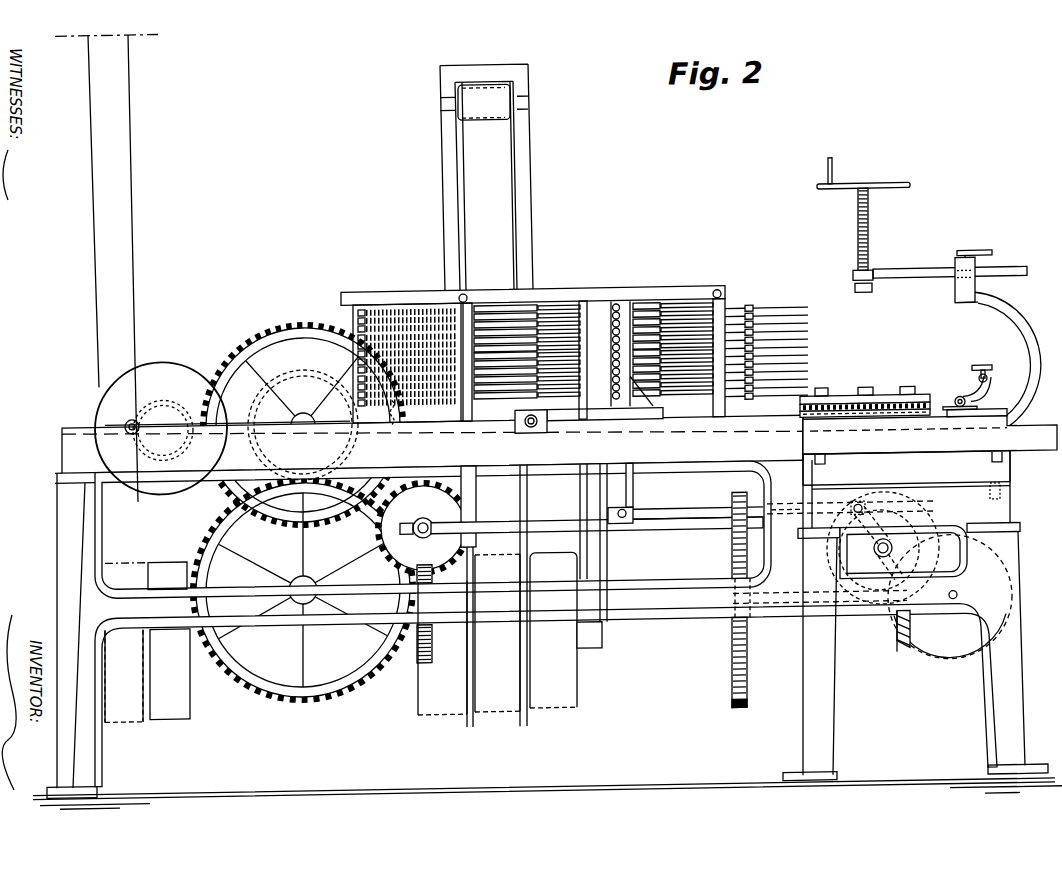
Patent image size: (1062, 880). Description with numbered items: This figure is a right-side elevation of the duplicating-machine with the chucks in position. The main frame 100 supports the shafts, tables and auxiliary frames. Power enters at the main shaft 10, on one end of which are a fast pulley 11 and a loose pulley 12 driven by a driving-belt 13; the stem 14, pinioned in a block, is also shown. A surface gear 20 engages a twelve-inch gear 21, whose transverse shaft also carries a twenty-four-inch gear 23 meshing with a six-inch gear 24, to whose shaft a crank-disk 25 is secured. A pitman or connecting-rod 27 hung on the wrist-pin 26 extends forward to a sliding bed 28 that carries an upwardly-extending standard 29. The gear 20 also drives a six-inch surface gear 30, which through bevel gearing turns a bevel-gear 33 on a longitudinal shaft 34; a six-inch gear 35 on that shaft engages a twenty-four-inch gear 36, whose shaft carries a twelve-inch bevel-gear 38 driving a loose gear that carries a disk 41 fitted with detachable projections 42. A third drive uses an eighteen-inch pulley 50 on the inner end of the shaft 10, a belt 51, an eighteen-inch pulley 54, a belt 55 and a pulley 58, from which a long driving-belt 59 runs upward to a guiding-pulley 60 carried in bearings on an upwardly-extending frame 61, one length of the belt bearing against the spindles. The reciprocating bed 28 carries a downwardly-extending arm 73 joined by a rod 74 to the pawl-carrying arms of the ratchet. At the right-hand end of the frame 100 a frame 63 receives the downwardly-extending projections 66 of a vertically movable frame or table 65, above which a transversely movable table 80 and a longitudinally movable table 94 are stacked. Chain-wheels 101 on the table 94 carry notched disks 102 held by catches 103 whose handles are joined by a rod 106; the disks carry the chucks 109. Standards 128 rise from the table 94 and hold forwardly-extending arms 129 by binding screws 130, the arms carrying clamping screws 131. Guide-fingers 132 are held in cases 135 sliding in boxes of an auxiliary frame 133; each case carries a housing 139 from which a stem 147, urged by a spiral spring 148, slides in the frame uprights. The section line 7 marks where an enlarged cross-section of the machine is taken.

The section line 7 is at (942, 707).
The main shaft 10 is at (265, 628).
The fast pulley 11 is at (148, 715).
The loose pulley 12 is at (167, 576).
The driving-belt 13 is at (106, 269).
The stem 14 is at (432, 659).
The surface gear 20 is at (353, 680).
The twelve-inch gear 21 is at (293, 400).
The twenty-four-inch gear 23 is at (280, 327).
The six-inch gear 24 is at (160, 404).
The crank-disk 25 is at (166, 358).
The wrist-pin 26 is at (130, 414).
The pitman or connecting-rod 27 is at (418, 409).
The bed 28 is at (580, 421).
The standard 29 is at (628, 300).
The six-inch surface gear 30 is at (423, 522).
The bevel-gear 33 is at (477, 506).
The longitudinal shaft 34 is at (547, 521).
The six-inch gear 35 is at (732, 536).
The twenty-four-inch gear 36 is at (732, 665).
The twelve-inch bevel-gear 38 is at (894, 651).
The disk 41 is at (927, 647).
The detachable projections 42 is at (958, 658).
The eighteen-inch pulley 50 is at (583, 702).
The belt 51 is at (553, 630).
The eighteen-inch pulley 54 is at (470, 727).
The belt 55 is at (442, 648).
The pulley 58 is at (524, 727).
The long driving-belt 59 is at (487, 396).
The guiding-pulley 60 is at (455, 91).
The upwardly-extending frame 61 is at (523, 157).
The frame 63 is at (911, 502).
The frame or table 65 is at (906, 468).
The downwardly-extending projections 66 is at (1003, 498).
The downwardly-extending arm 73 is at (642, 470).
The rod 74 is at (678, 511).
The frame or table 80 is at (930, 435).
The table 94 is at (993, 417).
The main frame 100 is at (547, 610).
The chain-wheels 101 is at (797, 421).
The disks 102 is at (797, 411).
The catches 103 is at (961, 402).
The rod 106 is at (989, 385).
The chucks 109 is at (846, 400).
The standards 128 is at (1020, 344).
The forwardly-extending arms 129 is at (915, 275).
The set or binding screws 130 is at (967, 258).
The clamping screws 131 is at (863, 224).
The guide-fingers 132 is at (785, 352).
The auxiliary frame 133 is at (592, 302).
The case 135 is at (712, 300).
The housing 139 is at (655, 302).
The stem 147 is at (550, 302).
The spiral spring 148 is at (410, 303).